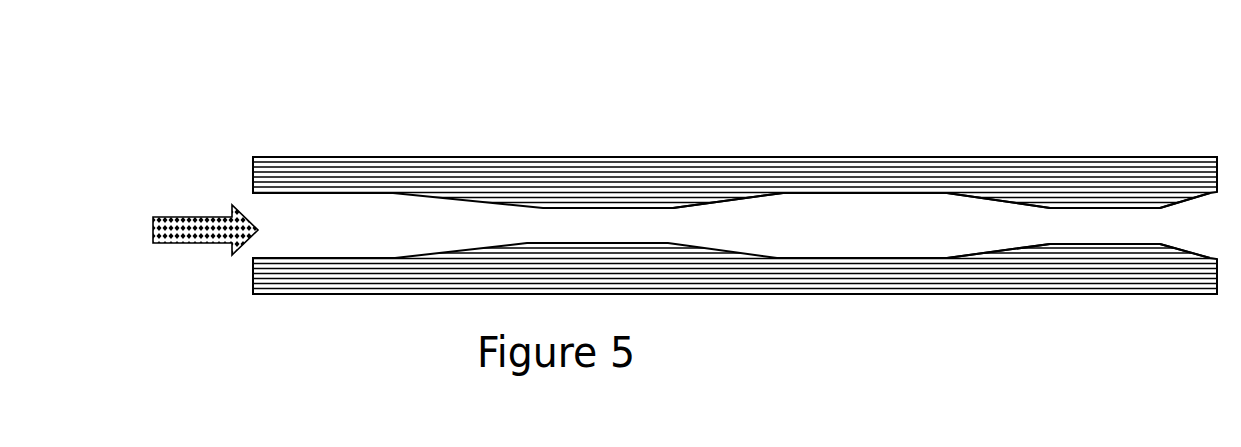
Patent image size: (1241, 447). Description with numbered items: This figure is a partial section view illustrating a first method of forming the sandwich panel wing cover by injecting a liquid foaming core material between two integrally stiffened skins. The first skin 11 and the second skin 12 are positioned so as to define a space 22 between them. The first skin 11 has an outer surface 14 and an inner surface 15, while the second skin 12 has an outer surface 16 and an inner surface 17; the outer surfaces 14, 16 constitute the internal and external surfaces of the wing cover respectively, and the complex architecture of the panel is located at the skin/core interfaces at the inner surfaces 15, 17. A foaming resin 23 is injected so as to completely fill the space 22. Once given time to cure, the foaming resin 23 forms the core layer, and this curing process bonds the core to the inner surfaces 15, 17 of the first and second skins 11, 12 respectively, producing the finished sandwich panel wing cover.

The first skin 11 is at (255, 157).
The second skin 12 is at (255, 294).
The outer surface 14 is at (998, 154).
The inner surface 15 is at (748, 192).
The outer surface 16 is at (700, 295).
The inner surface 17 is at (1000, 256).
The space 22 is at (945, 234).
The foaming resin 23 is at (183, 232).